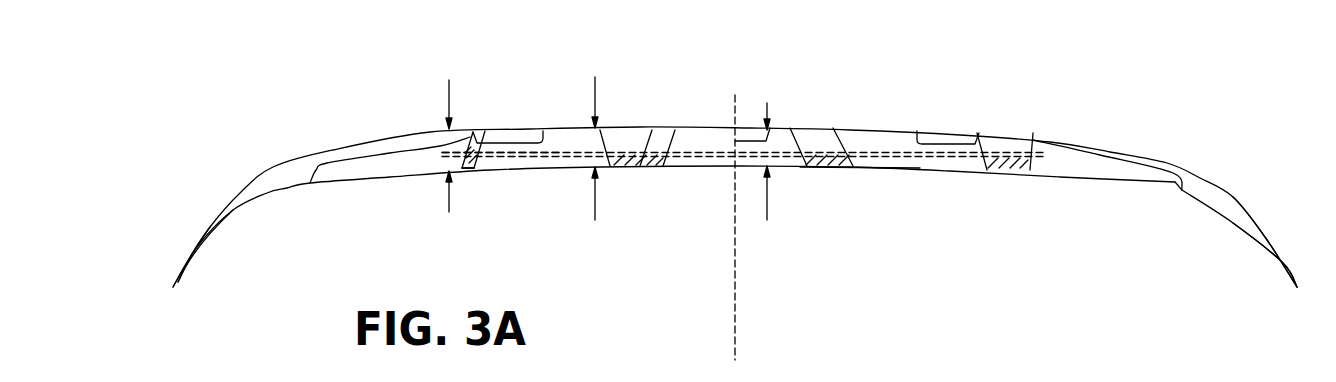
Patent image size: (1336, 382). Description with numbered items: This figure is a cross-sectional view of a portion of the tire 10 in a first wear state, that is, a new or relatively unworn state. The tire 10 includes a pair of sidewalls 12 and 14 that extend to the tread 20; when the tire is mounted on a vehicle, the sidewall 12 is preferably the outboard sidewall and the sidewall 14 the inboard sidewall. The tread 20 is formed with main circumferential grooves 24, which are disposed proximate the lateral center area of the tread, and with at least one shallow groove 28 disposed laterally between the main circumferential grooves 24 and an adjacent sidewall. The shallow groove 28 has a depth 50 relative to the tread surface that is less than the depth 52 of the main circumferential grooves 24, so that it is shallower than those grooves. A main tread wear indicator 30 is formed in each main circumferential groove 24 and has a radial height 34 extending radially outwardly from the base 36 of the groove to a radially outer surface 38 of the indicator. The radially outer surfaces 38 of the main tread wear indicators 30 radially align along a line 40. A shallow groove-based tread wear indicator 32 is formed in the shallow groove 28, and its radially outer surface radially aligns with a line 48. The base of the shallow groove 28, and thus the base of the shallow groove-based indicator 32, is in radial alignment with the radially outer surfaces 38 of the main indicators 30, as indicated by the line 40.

The tire 10 is at (620, 197).
The sidewall 12 is at (208, 229).
The sidewall 14 is at (1234, 197).
The tread 20 is at (905, 128).
The main circumferential groove 24 is at (607, 142).
The shallow groove 28 is at (460, 133).
The main tread wear indicator 30 is at (667, 133).
The shallow groove-based tread wear indicator 32 is at (467, 180).
The radial height 34 is at (792, 140).
The base 36 is at (858, 169).
The radially outer surface 38 is at (832, 160).
The line 40 is at (553, 156).
The line 48 is at (497, 155).
The depth 50 is at (450, 143).
The depth 52 is at (593, 147).